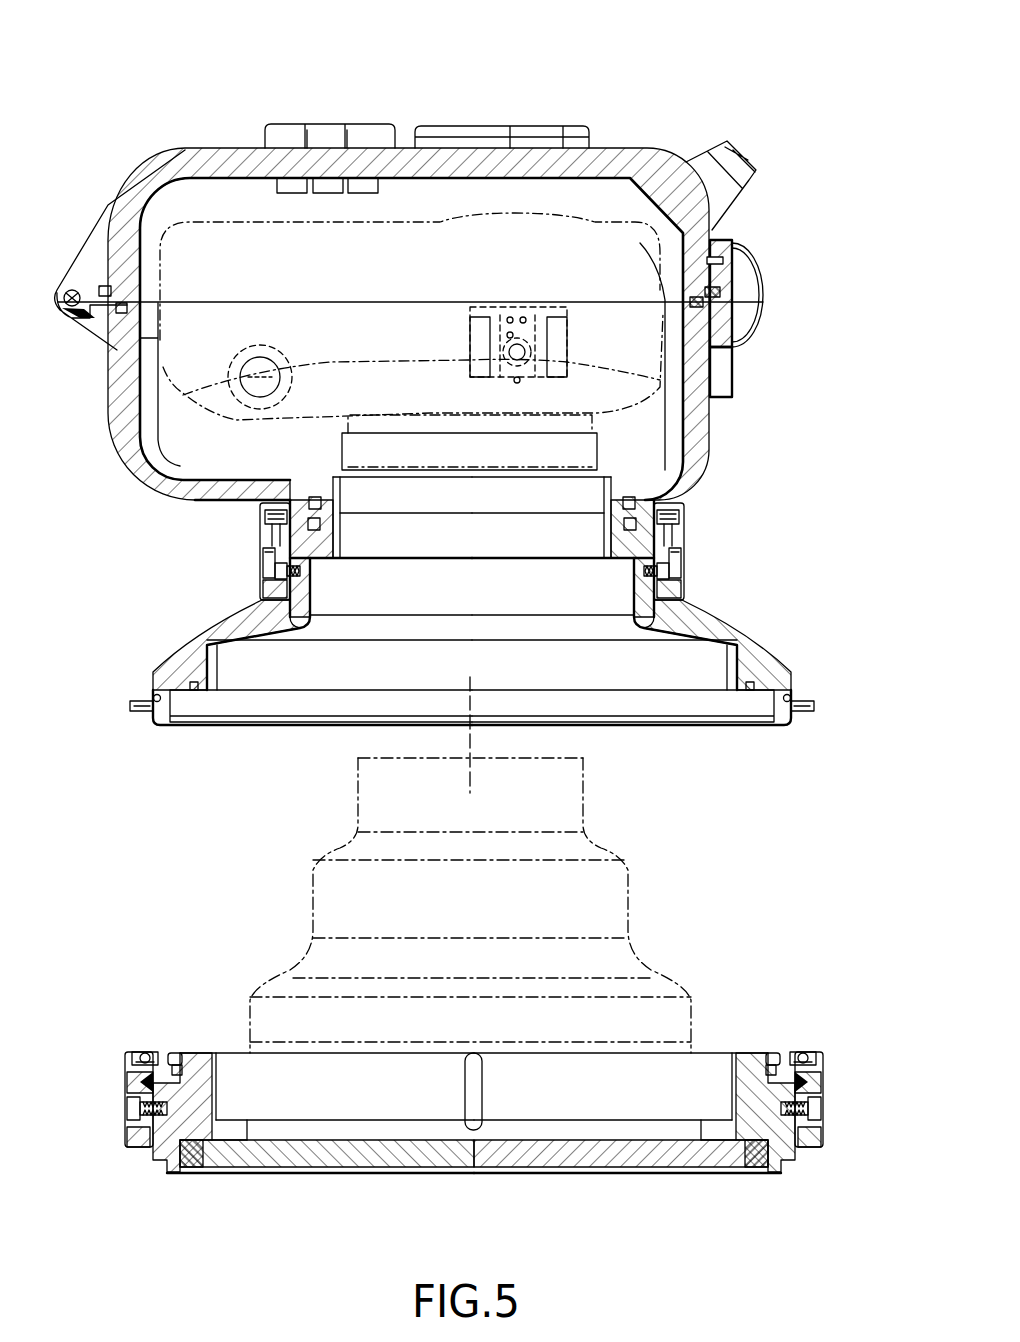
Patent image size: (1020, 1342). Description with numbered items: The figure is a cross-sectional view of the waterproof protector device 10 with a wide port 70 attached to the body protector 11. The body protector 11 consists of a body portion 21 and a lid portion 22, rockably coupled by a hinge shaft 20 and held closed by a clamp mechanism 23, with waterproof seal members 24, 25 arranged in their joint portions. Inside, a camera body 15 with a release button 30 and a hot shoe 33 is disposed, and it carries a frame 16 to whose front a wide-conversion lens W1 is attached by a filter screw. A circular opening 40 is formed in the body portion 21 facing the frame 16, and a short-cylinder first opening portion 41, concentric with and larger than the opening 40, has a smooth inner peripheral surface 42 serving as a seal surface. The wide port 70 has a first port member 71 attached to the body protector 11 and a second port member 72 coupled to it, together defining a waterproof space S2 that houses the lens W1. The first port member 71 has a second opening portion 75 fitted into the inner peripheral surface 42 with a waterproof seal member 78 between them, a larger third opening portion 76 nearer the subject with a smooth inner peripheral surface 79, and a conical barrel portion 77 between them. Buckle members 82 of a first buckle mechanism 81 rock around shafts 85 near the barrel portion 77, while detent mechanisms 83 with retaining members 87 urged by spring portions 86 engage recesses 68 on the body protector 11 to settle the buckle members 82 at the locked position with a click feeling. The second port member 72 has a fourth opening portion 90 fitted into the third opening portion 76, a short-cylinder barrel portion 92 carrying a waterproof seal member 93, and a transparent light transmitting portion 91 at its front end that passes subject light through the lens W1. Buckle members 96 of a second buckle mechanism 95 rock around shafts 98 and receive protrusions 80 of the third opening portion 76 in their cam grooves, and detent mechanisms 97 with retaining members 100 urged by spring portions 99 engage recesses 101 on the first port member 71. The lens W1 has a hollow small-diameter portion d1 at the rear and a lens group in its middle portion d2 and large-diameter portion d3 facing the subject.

The waterproof protector device 10 is at (620, 84).
The body protector 11 is at (141, 498).
The camera body 15 is at (712, 226).
The frame 16 is at (700, 432).
The hinge shaft 20 is at (70, 290).
The body portion 21 is at (135, 422).
The lid portion 22 is at (213, 156).
The clamp mechanism 23 is at (763, 322).
The waterproof seal member 24 is at (97, 343).
The waterproof seal member 25 is at (104, 284).
The release button 30 is at (150, 452).
The hot shoe 33 is at (690, 385).
The circular opening 40 is at (340, 510).
The first opening portion 41 is at (312, 565).
The inner peripheral surface 42 is at (343, 518).
The recess 68 is at (310, 497).
The wide port 70 is at (474, 1113).
The first port member 71 is at (727, 625).
The second port member 72 is at (732, 1162).
The second opening portion 75 is at (337, 545).
The third opening portion 76 is at (158, 727).
The barrel portion 77 is at (250, 640).
The waterproof seal member 78 is at (342, 537).
The inner peripheral surface 79 is at (197, 718).
The protrusion 80 is at (131, 709).
The first buckle mechanism 81 is at (477, 515).
The buckle member 82 is at (262, 550).
The detent mechanism 83 is at (267, 494).
The shaft 85 is at (263, 570).
The spring portion 86 is at (262, 517).
The retaining member 87 is at (291, 508).
The fourth opening portion 90 is at (196, 1053).
The light transmitting portion 91 is at (468, 1152).
The barrel portion 92 is at (203, 1100).
The waterproof seal member 93 is at (179, 1066).
The second buckle mechanism 95 is at (474, 1102).
The buckle member 96 is at (127, 1081).
The detent mechanism 97 is at (474, 1091).
The shaft 98 is at (130, 1109).
The spring portion 99 is at (140, 1052).
The retaining member 100 is at (175, 1056).
The recess 101 is at (153, 696).
The waterproof space S2 is at (478, 722).
The wide-conversion lens W1 is at (503, 905).
The small-diameter portion d1 is at (586, 794).
The middle portion d2 is at (632, 906).
The large-diameter portion d3 is at (703, 1015).